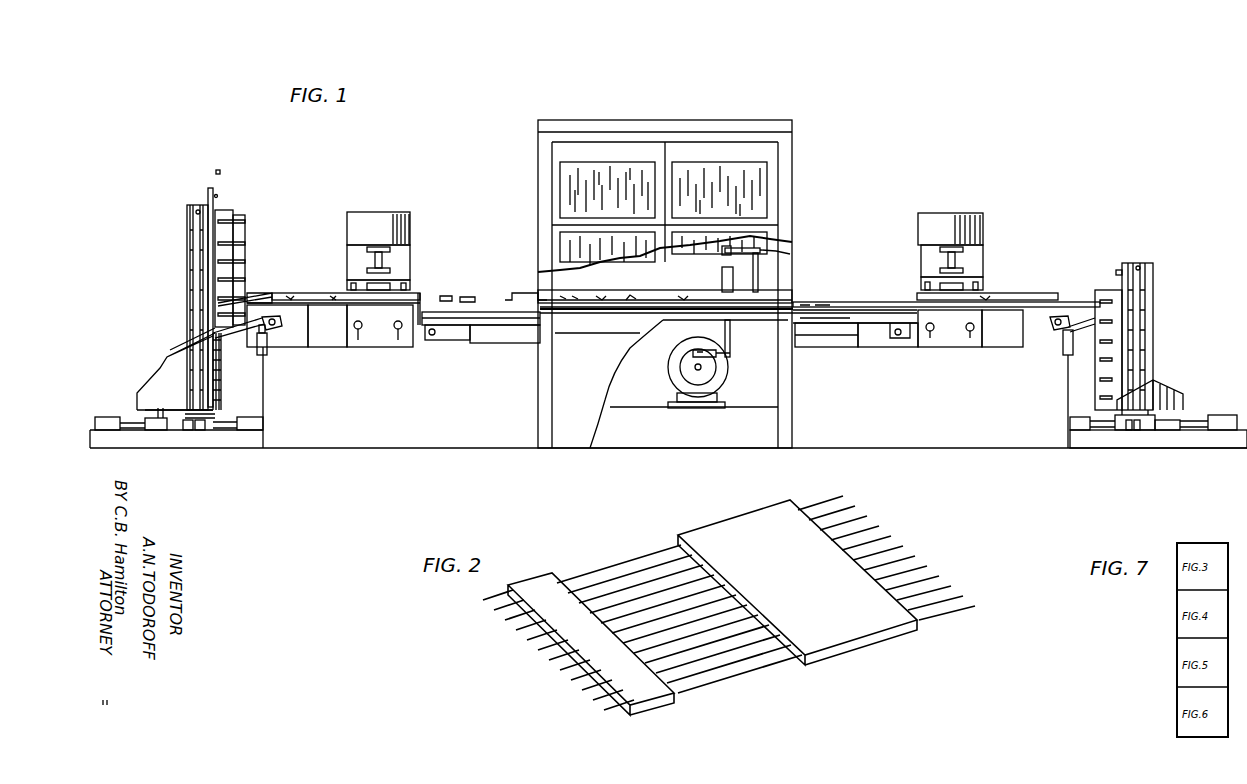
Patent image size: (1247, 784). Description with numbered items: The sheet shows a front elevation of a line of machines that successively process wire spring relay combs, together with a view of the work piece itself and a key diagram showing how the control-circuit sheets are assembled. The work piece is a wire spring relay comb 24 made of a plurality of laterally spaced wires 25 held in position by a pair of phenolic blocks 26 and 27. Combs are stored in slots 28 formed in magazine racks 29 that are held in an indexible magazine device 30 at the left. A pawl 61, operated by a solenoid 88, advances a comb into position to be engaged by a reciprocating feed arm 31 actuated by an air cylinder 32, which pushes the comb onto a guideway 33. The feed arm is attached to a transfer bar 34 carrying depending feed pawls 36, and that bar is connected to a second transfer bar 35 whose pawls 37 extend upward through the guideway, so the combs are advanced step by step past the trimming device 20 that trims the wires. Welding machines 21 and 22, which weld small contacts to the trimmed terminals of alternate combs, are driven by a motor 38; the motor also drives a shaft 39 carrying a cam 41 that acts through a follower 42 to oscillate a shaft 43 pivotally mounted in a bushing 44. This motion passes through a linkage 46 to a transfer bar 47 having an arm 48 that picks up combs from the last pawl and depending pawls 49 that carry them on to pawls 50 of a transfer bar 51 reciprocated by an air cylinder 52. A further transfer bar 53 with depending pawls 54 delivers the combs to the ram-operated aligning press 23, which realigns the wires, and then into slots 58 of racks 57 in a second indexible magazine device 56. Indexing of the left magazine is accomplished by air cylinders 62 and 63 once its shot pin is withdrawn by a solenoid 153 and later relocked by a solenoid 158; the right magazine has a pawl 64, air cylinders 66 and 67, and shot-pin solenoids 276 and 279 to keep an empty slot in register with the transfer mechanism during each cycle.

In FIG. 1, the trimming device 20 is at (378, 237).
In FIG. 1, the welding machine 21 is at (578, 186).
In FIG. 1, the welding machine 22 is at (740, 198).
In FIG. 1, the ram-operated aligning press 23 is at (960, 230).
In FIG. 1, the wire spring relay comb 24 is at (448, 290).
In FIG. 2, the wire spring relay comb 24 is at (756, 504).
In FIG. 2, the wires 25 is at (897, 540).
In FIG. 2, the phenolic block 26 is at (540, 588).
In FIG. 2, the phenolic block 27 is at (880, 633).
In FIG. 1, the slots 28 is at (222, 220).
In FIG. 1, the magazine racks 29 is at (198, 268).
In FIG. 1, the indexible magazine device 30 is at (142, 373).
In FIG. 1, the reciprocating feed arm 31 is at (252, 298).
In FIG. 1, the air cylinder 32 is at (510, 334).
In FIG. 1, the guideway 33 is at (328, 310).
In FIG. 1, the transfer bar 34 is at (289, 296).
In FIG. 1, the second transfer bar 35 is at (462, 334).
In FIG. 1, the feed pawls 36 is at (333, 296).
In FIG. 1, the pawls 37 is at (468, 298).
In FIG. 1, the motor 38 is at (720, 386).
In FIG. 1, the shaft 39 is at (695, 367).
In FIG. 1, the cam 41 is at (681, 380).
In FIG. 1, the follower 42 is at (717, 358).
In FIG. 1, the shaft 43 is at (732, 345).
In FIG. 1, the bushing 44 is at (720, 276).
In FIG. 1, the linkage 46 is at (770, 262).
In FIG. 1, the transfer bar 47 is at (631, 294).
In FIG. 1, the arm 48 is at (514, 293).
In FIG. 1, the depending pawls 49 is at (600, 295).
In FIG. 1, the pawls 50 is at (840, 308).
In FIG. 1, the transfer bar 51 is at (884, 332).
In FIG. 1, the air cylinder 52 is at (851, 333).
In FIG. 1, the transfer bar 53 is at (1018, 296).
In FIG. 1, the pawls 54 is at (986, 296).
In FIG. 1, the second indexible magazine device 56 is at (1172, 388).
In FIG. 1, the racks 57 is at (1140, 330).
In FIG. 1, the slots 58 is at (1105, 378).
In FIG. 1, the pawl 61 is at (277, 321).
In FIG. 1, the air cylinder 62 is at (106, 417).
In FIG. 1, the air cylinder 63 is at (252, 421).
In FIG. 1, the pawl 64 is at (1056, 330).
In FIG. 1, the air cylinder 66 is at (1080, 423).
In FIG. 1, the air cylinder 67 is at (1222, 417).
In FIG. 1, the solenoid 88 is at (263, 348).
In FIG. 1, the solenoid 153 is at (190, 432).
In FIG. 1, the solenoid 158 is at (199, 432).
In FIG. 1, the solenoid 276 is at (1138, 432).
In FIG. 1, the solenoid 279 is at (1128, 432).